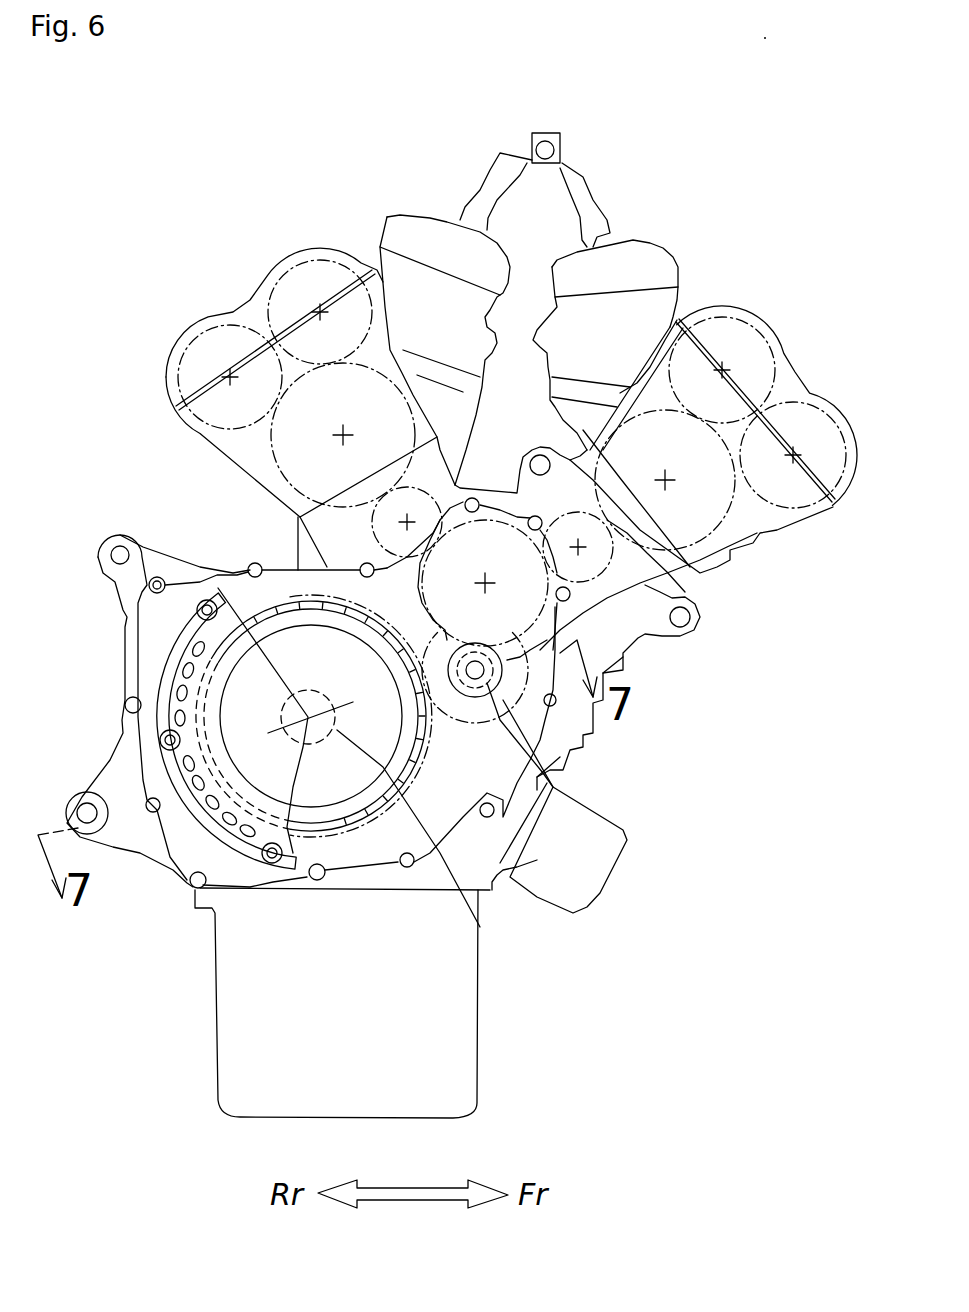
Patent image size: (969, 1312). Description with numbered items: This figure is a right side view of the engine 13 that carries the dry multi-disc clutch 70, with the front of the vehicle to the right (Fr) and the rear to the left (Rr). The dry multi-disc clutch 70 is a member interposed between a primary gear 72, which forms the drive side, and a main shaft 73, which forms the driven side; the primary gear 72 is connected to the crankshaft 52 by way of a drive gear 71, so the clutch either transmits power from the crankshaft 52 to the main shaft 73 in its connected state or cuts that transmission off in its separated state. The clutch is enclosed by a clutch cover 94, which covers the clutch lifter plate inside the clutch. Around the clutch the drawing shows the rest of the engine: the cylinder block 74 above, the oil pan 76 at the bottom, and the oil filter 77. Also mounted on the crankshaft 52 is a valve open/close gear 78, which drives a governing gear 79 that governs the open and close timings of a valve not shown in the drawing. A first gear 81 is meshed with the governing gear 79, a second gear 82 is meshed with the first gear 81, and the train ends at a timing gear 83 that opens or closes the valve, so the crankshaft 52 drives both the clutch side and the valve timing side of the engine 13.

The engine 13 is at (412, 167).
The crankshaft 52 is at (530, 717).
The dry multi-disc clutch 70 is at (266, 558).
The drive gear 71 is at (553, 690).
The primary gear 72 is at (340, 820).
The main shaft 73 is at (480, 927).
The cylinder block 74 is at (687, 592).
The oil pan 76 is at (215, 1013).
The oil filter 77 is at (597, 900).
The valve open/close gear 78 is at (600, 863).
The governing gear 79 is at (623, 657).
The first gear 81 is at (460, 430).
The second gear 82 is at (380, 353).
The timing gear 83 is at (177, 340).
The clutch cover 94 is at (160, 677).